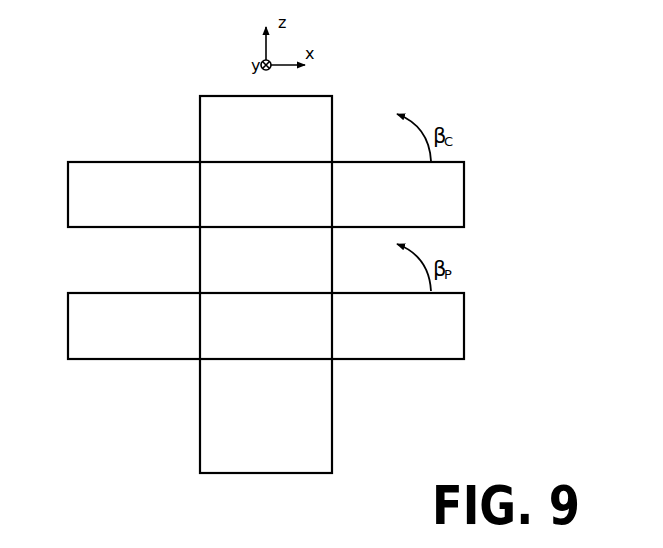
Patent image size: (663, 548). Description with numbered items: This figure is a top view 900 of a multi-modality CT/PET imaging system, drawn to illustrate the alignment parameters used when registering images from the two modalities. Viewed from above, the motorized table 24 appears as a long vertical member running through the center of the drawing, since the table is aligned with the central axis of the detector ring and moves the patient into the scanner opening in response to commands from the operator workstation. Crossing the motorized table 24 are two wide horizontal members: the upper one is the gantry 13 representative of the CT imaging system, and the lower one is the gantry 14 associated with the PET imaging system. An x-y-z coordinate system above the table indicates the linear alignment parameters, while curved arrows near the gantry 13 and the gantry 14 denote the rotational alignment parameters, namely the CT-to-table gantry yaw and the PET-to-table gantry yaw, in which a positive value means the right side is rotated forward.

The top view 900 is at (537, 28).
The motorized table 24 is at (200, 119).
The gantry 13 is at (68, 203).
The gantry 14 is at (68, 333).